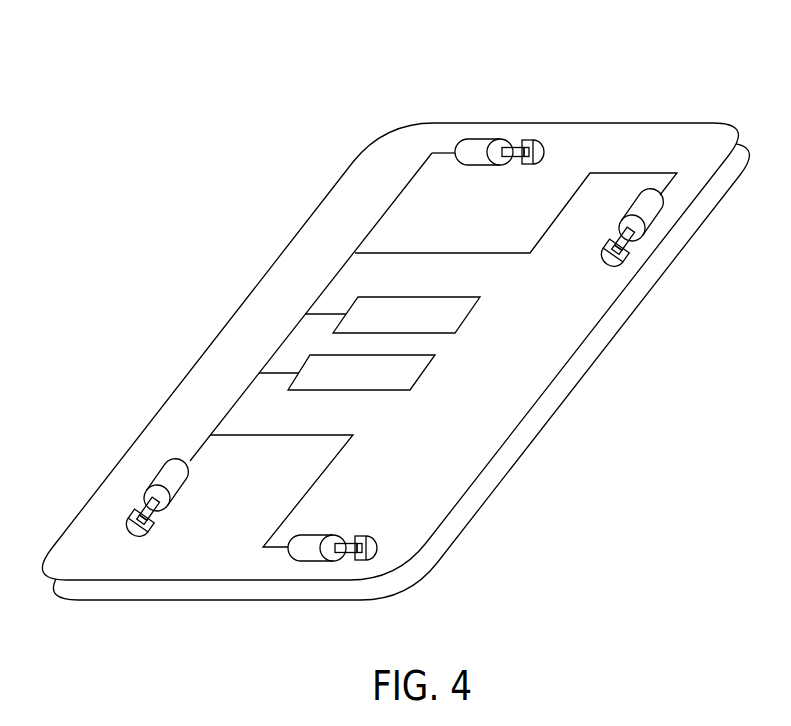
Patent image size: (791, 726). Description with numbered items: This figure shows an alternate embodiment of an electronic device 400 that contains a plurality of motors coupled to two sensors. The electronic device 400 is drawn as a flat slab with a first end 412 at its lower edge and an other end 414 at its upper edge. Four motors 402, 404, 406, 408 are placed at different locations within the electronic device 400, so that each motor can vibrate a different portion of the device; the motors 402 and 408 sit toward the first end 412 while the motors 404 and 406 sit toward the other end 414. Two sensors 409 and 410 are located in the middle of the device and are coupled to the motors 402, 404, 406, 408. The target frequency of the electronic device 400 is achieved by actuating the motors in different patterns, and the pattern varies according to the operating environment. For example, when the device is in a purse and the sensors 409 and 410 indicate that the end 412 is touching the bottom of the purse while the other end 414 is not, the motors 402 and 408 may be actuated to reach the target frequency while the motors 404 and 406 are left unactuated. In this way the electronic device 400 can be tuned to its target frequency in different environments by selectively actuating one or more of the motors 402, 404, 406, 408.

The electronic device 400 is at (395, 341).
The motor 402 is at (193, 496).
The motor 404 is at (491, 180).
The motor 406 is at (612, 223).
The motor 408 is at (351, 516).
The sensor 409 is at (468, 318).
The sensor 410 is at (423, 375).
The end of the electronic device 412 is at (218, 600).
The other end of the electronic device 414 is at (560, 122).